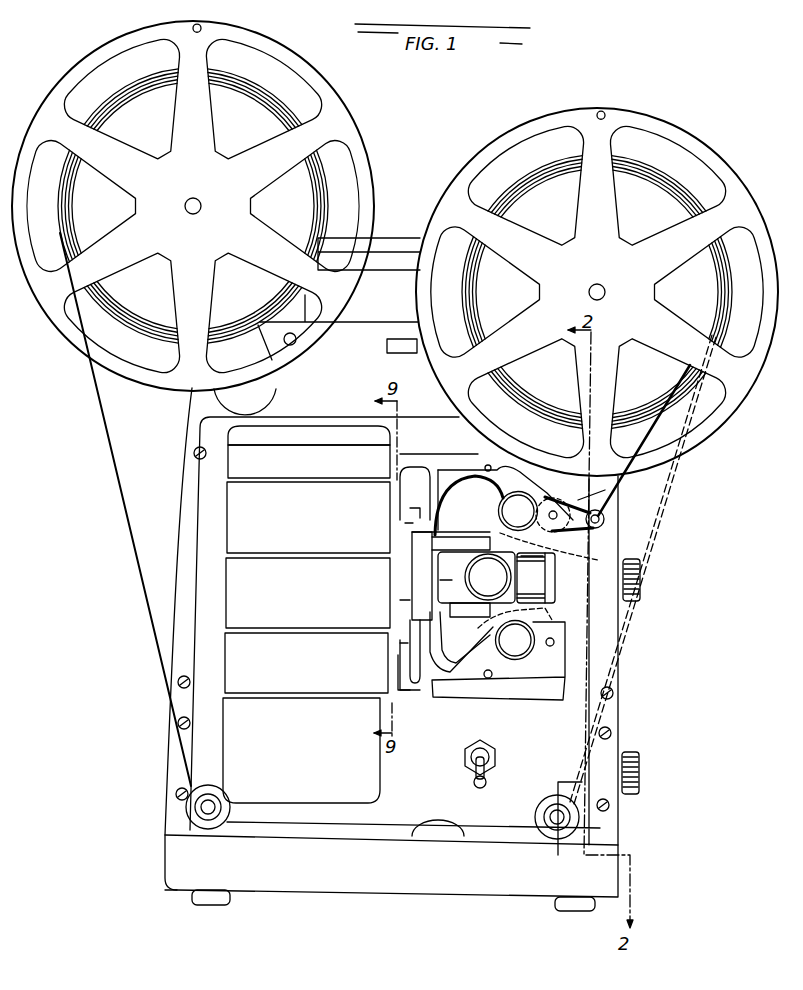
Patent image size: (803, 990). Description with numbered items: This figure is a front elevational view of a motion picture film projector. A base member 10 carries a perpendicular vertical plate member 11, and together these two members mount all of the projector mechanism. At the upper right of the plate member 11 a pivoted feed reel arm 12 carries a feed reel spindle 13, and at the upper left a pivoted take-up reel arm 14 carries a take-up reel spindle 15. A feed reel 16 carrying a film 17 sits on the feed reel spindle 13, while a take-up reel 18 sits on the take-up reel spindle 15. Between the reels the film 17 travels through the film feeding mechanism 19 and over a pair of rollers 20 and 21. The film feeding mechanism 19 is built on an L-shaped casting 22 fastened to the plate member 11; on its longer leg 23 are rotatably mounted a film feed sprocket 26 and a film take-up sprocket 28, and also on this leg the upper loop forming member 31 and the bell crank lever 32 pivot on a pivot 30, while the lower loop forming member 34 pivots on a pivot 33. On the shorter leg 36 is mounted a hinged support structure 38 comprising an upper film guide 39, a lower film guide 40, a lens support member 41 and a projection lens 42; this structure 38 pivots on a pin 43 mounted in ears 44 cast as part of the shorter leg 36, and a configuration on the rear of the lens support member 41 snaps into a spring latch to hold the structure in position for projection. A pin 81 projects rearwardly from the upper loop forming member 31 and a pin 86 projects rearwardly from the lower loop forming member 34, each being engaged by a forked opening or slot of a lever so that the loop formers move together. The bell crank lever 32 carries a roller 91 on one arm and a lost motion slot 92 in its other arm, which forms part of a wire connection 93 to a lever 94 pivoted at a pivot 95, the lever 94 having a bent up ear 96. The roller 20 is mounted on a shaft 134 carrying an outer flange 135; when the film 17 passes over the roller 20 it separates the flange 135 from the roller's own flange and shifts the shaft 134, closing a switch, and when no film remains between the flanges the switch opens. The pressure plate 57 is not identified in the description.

The base member 10 is at (608, 865).
The vertical plate member 11 is at (607, 662).
The feed reel arm 12 is at (553, 414).
The feed reel spindle 13 is at (597, 284).
The take-up reel arm 14 is at (278, 382).
The take-up reel spindle 15 is at (189, 198).
The feed reel 16 is at (701, 148).
The film 17 is at (688, 436).
The take-up reel 18 is at (342, 104).
The film feeding mechanism 19 is at (576, 598).
The roller 20 is at (584, 831).
The roller 21 is at (186, 808).
The L-shaped casting 22 is at (417, 690).
The longer leg 23 is at (445, 462).
The film feed sprocket 26 is at (543, 505).
The film take-up sprocket 28 is at (520, 653).
The pivot 30 is at (560, 534).
The upper loop forming member 31 is at (450, 457).
The bell crank lever 32 is at (588, 499).
The pivot 33 is at (550, 648).
The lower loop forming member 34 is at (492, 690).
The shorter leg 36 is at (397, 667).
The hinged support structure 38 is at (403, 612).
The upper film guide 39 is at (523, 547).
The lower film guide 40 is at (540, 616).
The lens support member 41 is at (450, 581).
The projection lens 42 is at (554, 579).
The pin 43 is at (417, 513).
The ears 44 is at (410, 523).
The pressure plate 57 is at (395, 570).
The pin 81 is at (486, 465).
The pin 86 is at (488, 680).
The roller 91 is at (604, 516).
The lost motion slot 92 is at (583, 555).
The wire connection 93 is at (503, 512).
The lever 94 is at (451, 539).
The pivot 95 is at (434, 510).
The bent up ear 96 is at (477, 580).
The shaft 134 is at (546, 800).
The flange 135 is at (546, 813).